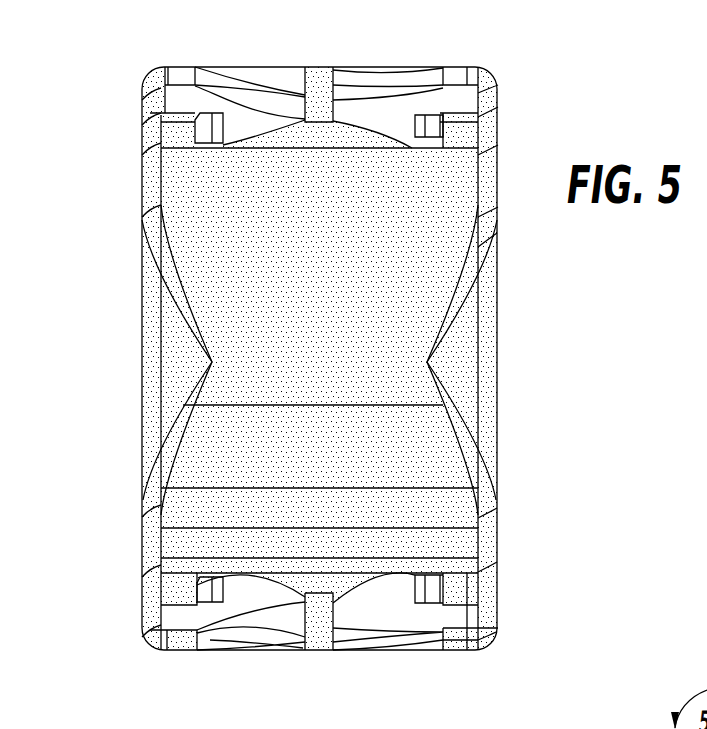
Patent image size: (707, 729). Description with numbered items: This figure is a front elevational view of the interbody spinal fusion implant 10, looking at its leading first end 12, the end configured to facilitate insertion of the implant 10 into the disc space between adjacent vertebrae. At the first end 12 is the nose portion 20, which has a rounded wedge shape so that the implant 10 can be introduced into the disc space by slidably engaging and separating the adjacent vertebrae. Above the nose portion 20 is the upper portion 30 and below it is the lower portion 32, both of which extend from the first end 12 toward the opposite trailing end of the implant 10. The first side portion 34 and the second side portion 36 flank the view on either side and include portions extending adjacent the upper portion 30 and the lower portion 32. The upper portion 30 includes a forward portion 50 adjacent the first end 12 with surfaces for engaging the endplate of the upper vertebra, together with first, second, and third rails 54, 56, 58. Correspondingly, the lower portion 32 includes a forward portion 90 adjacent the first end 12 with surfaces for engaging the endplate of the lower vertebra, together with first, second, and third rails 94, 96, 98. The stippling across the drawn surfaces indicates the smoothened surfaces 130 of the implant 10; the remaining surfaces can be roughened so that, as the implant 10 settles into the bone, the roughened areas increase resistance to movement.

The implant 10 is at (120, 117).
The first end 12 is at (410, 373).
The nose portion 20 is at (238, 366).
The upper portion 30 is at (322, 50).
The lower portion 32 is at (372, 665).
The first side portion 34 is at (522, 256).
The second side portion 36 is at (125, 212).
The forward portion 50 is at (455, 175).
The first rail 54 is at (322, 100).
The second rail 56 is at (460, 77).
The third rail 58 is at (152, 76).
The forward portion 90 is at (453, 547).
The first rail 94 is at (320, 650).
The second rail 96 is at (467, 650).
The third rail 98 is at (160, 650).
The smoothened surfaces 130 is at (440, 306).